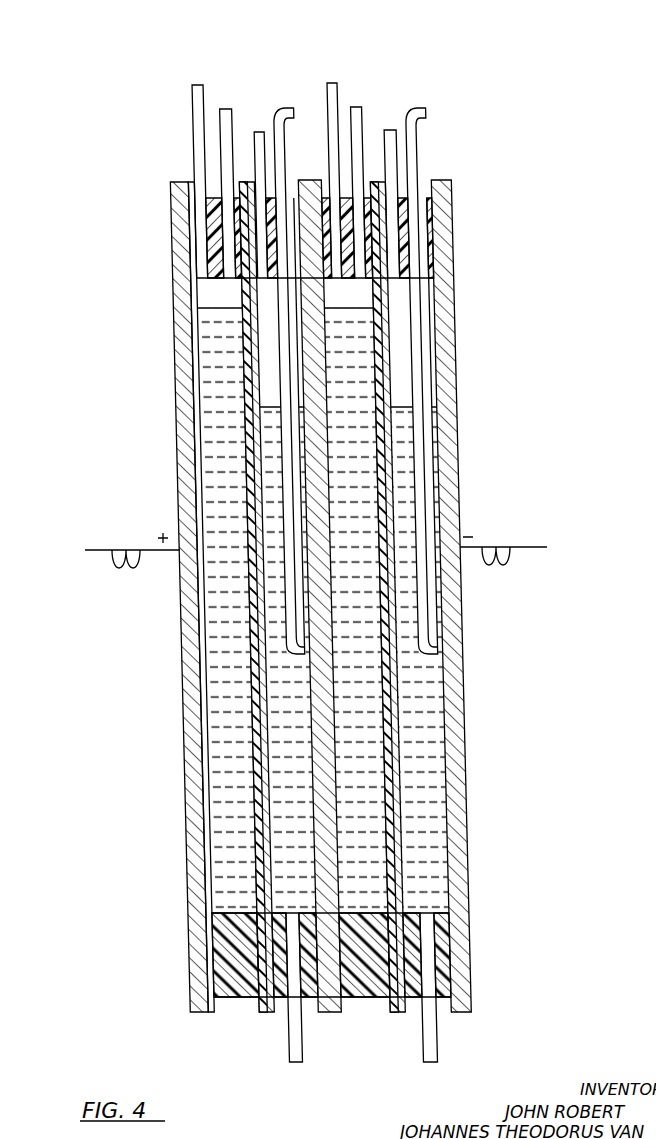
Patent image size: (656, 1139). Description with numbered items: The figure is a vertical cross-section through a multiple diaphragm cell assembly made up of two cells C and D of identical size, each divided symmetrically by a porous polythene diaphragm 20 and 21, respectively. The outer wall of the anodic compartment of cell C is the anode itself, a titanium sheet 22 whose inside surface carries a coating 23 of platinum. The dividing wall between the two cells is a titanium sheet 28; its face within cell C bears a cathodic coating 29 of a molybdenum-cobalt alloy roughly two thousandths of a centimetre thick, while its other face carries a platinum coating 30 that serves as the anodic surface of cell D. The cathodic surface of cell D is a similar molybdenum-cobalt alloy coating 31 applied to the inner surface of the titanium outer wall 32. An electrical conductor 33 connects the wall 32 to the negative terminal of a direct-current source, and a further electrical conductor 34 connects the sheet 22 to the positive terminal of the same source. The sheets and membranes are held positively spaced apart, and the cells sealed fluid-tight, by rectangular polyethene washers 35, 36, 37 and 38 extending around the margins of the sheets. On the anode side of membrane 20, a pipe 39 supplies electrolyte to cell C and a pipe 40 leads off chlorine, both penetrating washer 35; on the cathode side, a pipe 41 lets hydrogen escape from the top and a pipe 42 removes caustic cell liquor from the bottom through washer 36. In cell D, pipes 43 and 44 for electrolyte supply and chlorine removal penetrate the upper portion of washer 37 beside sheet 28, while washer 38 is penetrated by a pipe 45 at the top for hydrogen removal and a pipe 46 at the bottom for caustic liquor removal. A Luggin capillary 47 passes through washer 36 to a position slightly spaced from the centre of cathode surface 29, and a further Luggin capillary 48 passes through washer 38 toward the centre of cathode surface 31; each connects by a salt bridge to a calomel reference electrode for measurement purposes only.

The porous polythene diaphragm 20 is at (255, 740).
The porous polythene diaphragm 21 is at (400, 695).
The titanium sheet 22 is at (192, 695).
The platinum coating 23 is at (207, 717).
The titanium sheet 28 is at (333, 328).
The coating 29 is at (315, 333).
The platinum coating 30 is at (347, 365).
The coating 31 is at (434, 389).
The titanium outer wall 32 is at (447, 418).
The electrical conductor 33 is at (507, 538).
The electrical conductor 34 is at (132, 545).
The polyethene washer 35 is at (242, 234).
The polythene washer 36 is at (277, 263).
The polythene washer 37 is at (370, 268).
The polythene washer 38 is at (387, 224).
The pipe 39 is at (196, 100).
The pipe 40 is at (222, 137).
The pipe 41 is at (264, 103).
The pipe 42 is at (299, 1082).
The pipe 43 is at (336, 74).
The pipe 44 is at (364, 117).
The pipe 45 is at (398, 140).
The pipe 46 is at (432, 1084).
The Luggin capillary 47 is at (283, 106).
The Luggin capillary 48 is at (415, 163).
The cell C is at (245, 470).
The cell D is at (427, 805).